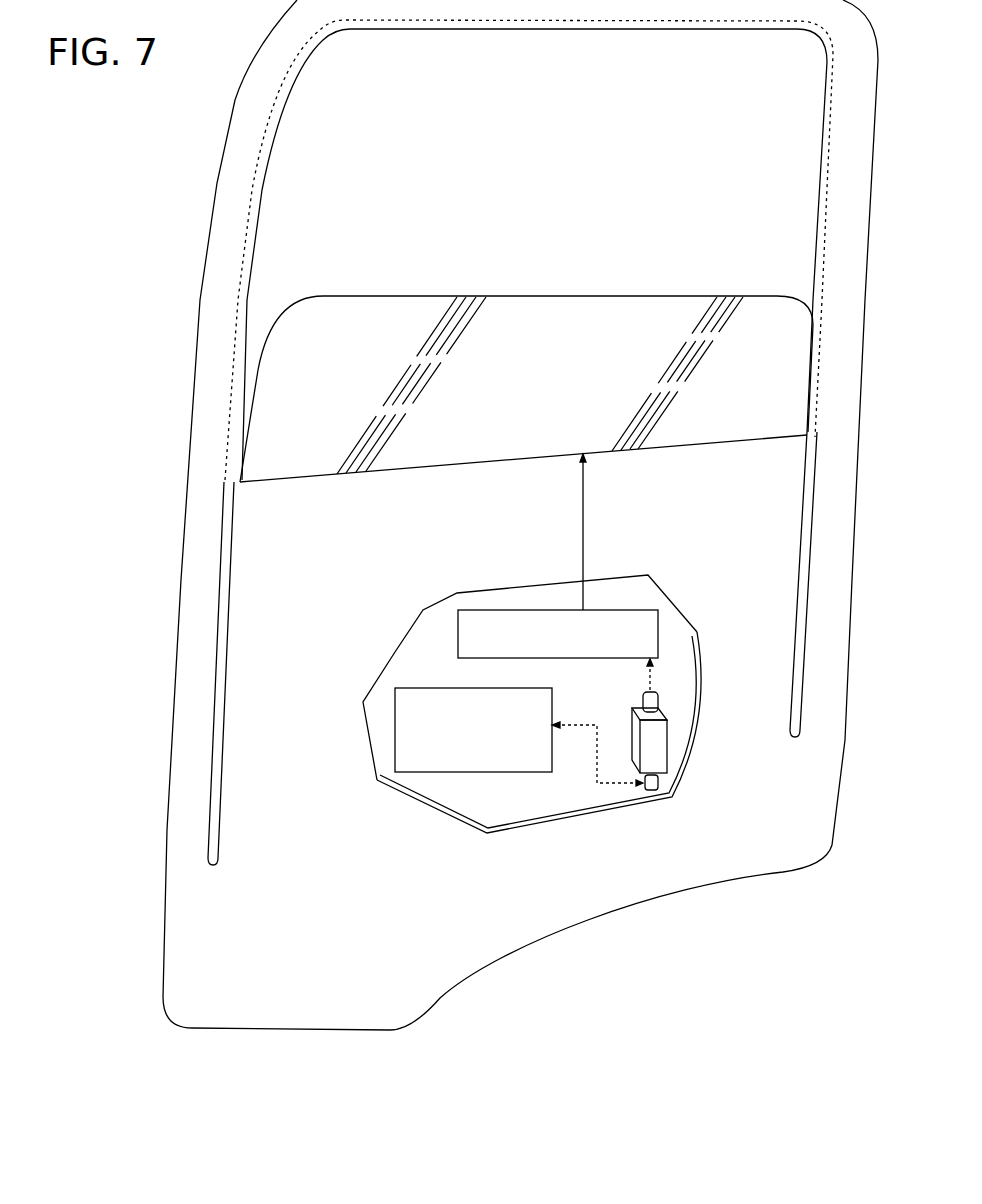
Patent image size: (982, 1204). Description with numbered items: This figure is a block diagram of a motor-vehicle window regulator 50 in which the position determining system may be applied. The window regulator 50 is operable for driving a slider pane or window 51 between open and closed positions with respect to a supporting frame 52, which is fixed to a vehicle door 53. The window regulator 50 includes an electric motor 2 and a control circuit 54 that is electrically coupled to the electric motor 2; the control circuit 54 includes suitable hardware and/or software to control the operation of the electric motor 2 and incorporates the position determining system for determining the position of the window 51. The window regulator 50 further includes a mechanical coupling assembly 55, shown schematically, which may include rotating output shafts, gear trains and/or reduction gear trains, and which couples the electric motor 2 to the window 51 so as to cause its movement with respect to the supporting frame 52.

The electric motor 2 is at (655, 748).
The window regulator 50 is at (452, 777).
The window 51 is at (527, 313).
The supporting frame 52 is at (222, 837).
The vehicle door 53 is at (817, 775).
The control circuit 54 is at (520, 773).
The mechanical coupling assembly 55 is at (457, 637).